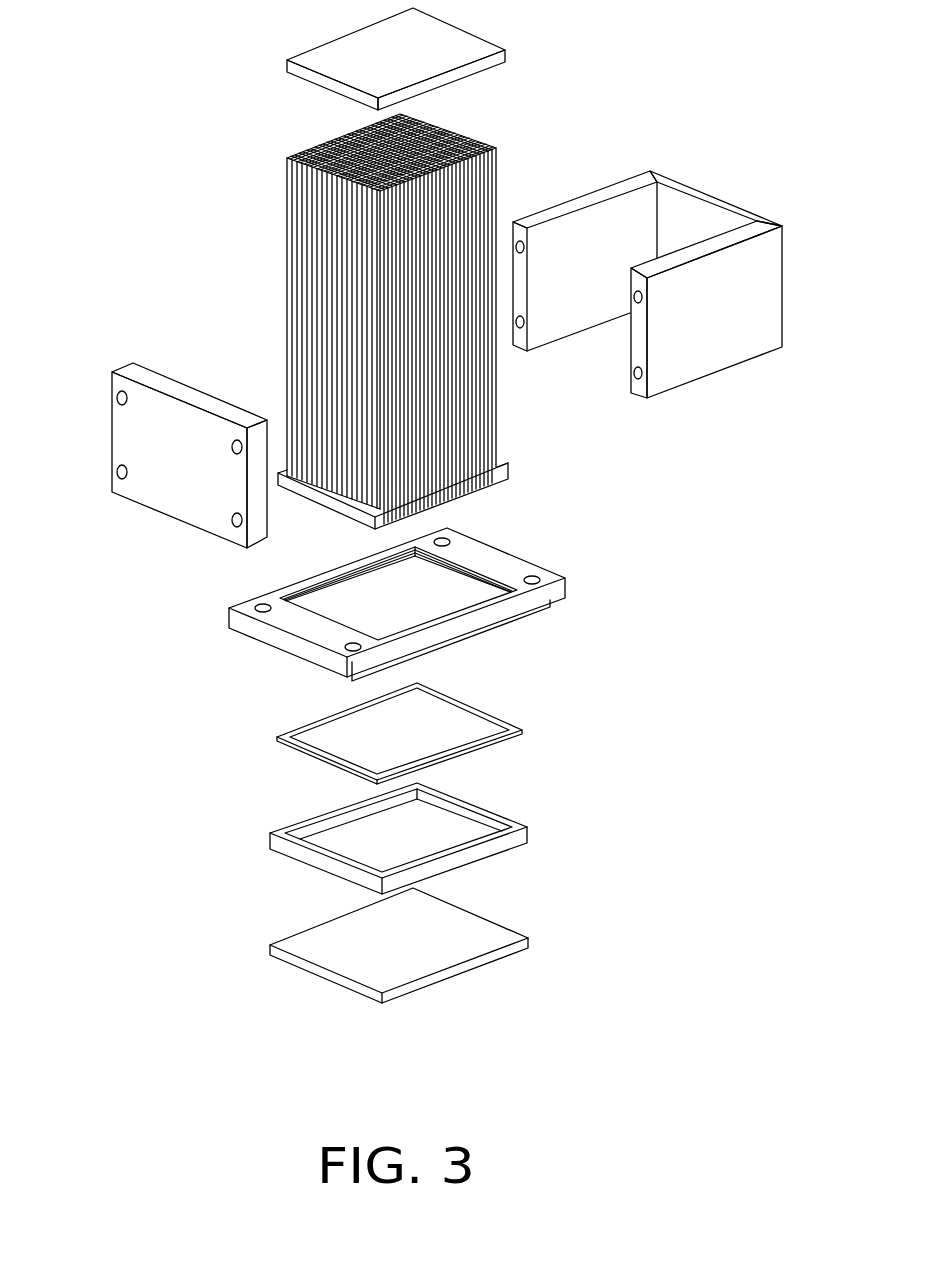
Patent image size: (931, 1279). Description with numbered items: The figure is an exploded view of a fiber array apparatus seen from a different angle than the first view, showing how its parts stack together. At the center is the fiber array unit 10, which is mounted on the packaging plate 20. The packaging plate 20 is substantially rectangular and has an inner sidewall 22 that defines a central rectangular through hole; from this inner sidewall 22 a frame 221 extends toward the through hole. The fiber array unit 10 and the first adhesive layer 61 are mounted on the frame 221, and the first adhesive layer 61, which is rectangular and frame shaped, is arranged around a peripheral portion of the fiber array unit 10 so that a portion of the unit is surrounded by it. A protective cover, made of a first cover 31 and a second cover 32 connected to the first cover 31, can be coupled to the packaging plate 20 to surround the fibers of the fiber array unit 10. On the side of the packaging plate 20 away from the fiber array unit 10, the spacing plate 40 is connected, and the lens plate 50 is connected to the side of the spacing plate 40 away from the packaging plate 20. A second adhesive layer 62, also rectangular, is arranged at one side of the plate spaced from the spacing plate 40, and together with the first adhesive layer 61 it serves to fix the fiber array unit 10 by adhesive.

The fiber array unit 10 is at (263, 261).
The packaging plate 20 is at (407, 601).
The inner sidewall 22 is at (352, 571).
The frame 221 is at (320, 598).
The first cover 31 is at (647, 193).
The second cover 32 is at (116, 384).
The spacing plate 40 is at (528, 833).
The lens plate 50 is at (508, 933).
The first adhesive layer 61 is at (503, 718).
The second adhesive layer 62 is at (453, 35).